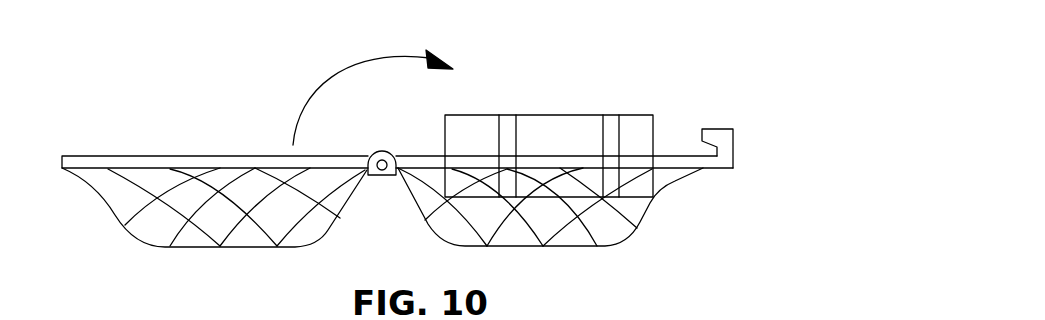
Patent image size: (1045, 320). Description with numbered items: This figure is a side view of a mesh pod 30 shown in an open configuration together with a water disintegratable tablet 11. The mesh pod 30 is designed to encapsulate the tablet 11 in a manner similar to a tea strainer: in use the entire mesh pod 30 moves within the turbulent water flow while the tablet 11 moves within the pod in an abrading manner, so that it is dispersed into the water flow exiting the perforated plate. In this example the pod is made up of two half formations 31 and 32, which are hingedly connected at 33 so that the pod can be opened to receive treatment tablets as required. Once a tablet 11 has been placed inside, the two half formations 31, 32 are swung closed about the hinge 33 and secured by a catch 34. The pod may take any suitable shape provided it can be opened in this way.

The water disintegratable tablet 11 is at (527, 113).
The mesh pod 30 is at (717, 90).
The half formation 31 is at (155, 247).
The half formation 32 is at (568, 242).
The hinge connection 33 is at (375, 170).
The catch 34 is at (733, 138).